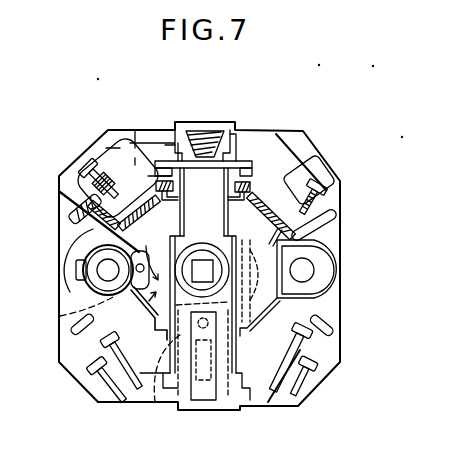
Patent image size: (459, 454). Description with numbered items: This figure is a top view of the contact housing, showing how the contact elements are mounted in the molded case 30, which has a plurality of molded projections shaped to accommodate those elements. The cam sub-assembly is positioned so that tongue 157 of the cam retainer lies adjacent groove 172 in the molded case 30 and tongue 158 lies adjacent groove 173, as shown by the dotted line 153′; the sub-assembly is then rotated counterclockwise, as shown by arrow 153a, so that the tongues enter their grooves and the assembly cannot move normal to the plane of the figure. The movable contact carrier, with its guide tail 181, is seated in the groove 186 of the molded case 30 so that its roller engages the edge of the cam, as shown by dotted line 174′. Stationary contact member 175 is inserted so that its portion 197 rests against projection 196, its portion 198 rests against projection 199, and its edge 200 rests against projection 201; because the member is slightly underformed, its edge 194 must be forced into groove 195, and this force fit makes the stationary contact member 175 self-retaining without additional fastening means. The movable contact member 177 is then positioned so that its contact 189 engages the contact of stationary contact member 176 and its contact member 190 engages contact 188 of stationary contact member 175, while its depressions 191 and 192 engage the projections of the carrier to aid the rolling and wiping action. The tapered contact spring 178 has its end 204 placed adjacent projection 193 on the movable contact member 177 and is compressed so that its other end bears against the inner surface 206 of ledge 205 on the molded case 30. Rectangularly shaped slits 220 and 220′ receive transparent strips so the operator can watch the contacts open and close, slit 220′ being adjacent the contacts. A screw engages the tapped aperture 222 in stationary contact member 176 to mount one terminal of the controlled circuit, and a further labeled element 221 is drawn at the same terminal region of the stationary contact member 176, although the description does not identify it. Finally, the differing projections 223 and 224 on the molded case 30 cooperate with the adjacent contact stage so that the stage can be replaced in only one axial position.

The molded case 30 is at (316, 134).
The contact 188 is at (116, 148).
The ledge 205 is at (207, 128).
The inner surface 206 is at (200, 130).
The contact spring 178 is at (232, 120).
The slit 220 is at (120, 150).
The contact member 190 is at (143, 148).
The projection 193 is at (184, 135).
The depression 191 is at (236, 132).
The depression 192 is at (172, 147).
The contact 189 is at (255, 185).
The movable contact member 177 is at (244, 170).
The guide tail 181 is at (293, 186).
The edge 194 is at (103, 150).
The groove 195 is at (84, 170).
The right terminal screw 221 is at (337, 183).
The projection 196 is at (90, 215).
The tapped aperture 222 is at (334, 214).
The portion 197 is at (70, 217).
The projection 199 is at (152, 196).
The portion 198 is at (136, 213).
The end 204 is at (203, 173).
The edge 200 is at (181, 197).
The projection 201 is at (170, 206).
The groove 186 is at (188, 226).
The stationary contact member 176 is at (300, 232).
The stationary contact member 175 is at (97, 232).
The arrow 153a is at (171, 246).
The projection 223 is at (330, 262).
The projection 224 is at (78, 282).
The tongue 158 is at (267, 290).
The tongue 157 is at (64, 313).
The groove 172 is at (146, 334).
The groove 173 is at (277, 300).
The dotted line 153′ is at (129, 361).
The slit 220′ is at (124, 392).
The dotted line 174′ is at (155, 402).